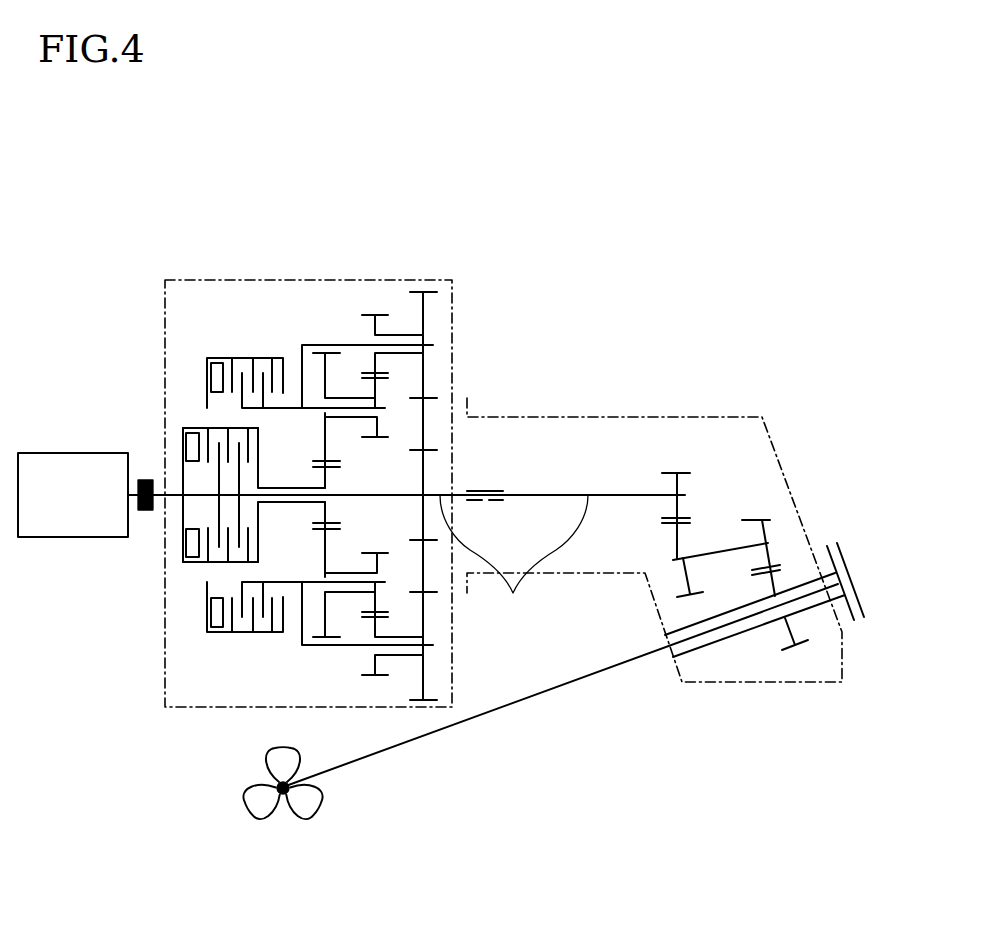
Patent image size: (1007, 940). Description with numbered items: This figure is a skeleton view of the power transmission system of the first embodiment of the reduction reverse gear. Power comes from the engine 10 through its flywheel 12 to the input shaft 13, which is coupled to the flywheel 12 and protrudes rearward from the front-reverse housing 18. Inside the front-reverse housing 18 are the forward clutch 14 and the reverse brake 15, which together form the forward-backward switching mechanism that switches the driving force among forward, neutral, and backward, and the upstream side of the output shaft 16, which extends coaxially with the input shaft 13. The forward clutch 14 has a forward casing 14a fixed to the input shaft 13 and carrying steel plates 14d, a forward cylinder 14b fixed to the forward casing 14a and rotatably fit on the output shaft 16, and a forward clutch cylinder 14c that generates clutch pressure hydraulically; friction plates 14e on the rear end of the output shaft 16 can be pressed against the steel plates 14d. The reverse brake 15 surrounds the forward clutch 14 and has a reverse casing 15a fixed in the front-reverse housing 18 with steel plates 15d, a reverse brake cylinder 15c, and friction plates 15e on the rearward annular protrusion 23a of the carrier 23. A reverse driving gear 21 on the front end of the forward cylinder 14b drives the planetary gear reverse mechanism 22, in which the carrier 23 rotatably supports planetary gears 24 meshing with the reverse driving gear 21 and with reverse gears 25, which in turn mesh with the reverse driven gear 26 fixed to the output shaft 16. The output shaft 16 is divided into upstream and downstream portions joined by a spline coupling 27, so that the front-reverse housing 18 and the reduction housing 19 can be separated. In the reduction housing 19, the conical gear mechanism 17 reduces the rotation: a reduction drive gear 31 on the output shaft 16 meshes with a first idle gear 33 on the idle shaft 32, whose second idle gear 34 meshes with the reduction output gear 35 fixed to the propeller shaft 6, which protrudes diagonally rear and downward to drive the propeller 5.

The propeller 5 is at (253, 800).
The propeller shaft 6 is at (503, 707).
The engine 10 is at (80, 468).
The flywheel 12 is at (147, 513).
The input shaft 13 is at (175, 493).
The forward clutch 14 is at (180, 418).
The forward casing 14a is at (205, 565).
The forward cylinder 14b is at (294, 488).
The forward clutch cylinder 14c is at (190, 556).
The steel plates 14d is at (208, 442).
The friction plates 14e is at (240, 515).
The reverse brake 15 is at (257, 350).
The reverse casing 15a is at (230, 357).
The reverse brake cylinder 15c is at (220, 629).
The steel plates 15d is at (260, 628).
The friction plates 15e is at (262, 402).
The output shaft 16 is at (462, 560).
The conical gear mechanism 17 is at (703, 470).
The front-reverse housing 18 is at (192, 708).
The reduction housing 19 is at (735, 683).
The reverse driving gear 21 is at (328, 477).
The planetary gear reverse mechanism 22 is at (389, 305).
The carrier 23 is at (300, 345).
The rearward annular protrusion 23a is at (288, 586).
The planetary gear 24 is at (330, 377).
The reverse gear 25 is at (424, 318).
The reverse driven gear 26 is at (440, 482).
The coupling 27 is at (492, 489).
The reduction drive gear 31 is at (675, 488).
The idle shaft 32 is at (712, 552).
The first idle gear 33 is at (688, 577).
The second idle gear 34 is at (763, 537).
The reduction output gear 35 is at (792, 648).